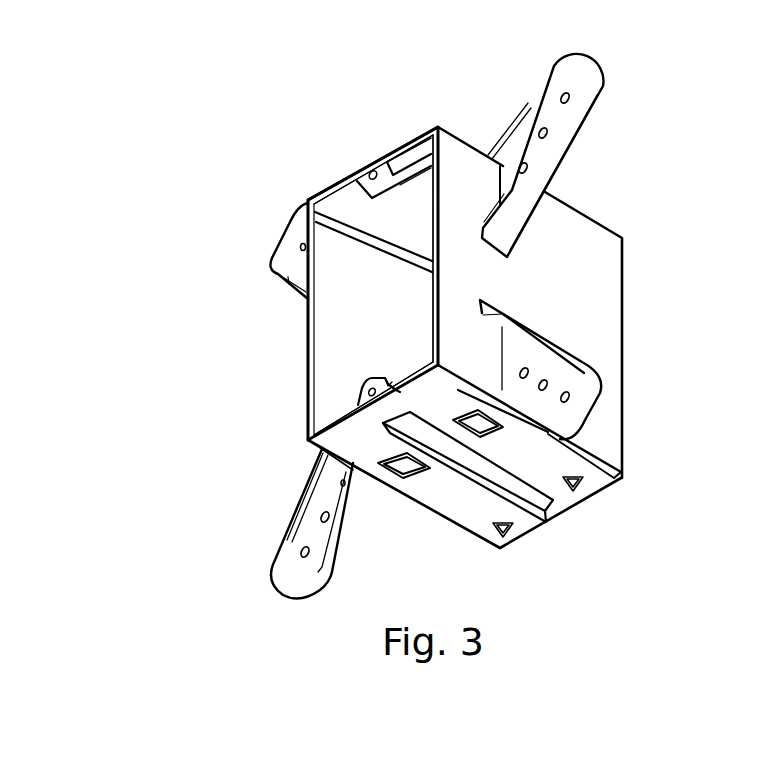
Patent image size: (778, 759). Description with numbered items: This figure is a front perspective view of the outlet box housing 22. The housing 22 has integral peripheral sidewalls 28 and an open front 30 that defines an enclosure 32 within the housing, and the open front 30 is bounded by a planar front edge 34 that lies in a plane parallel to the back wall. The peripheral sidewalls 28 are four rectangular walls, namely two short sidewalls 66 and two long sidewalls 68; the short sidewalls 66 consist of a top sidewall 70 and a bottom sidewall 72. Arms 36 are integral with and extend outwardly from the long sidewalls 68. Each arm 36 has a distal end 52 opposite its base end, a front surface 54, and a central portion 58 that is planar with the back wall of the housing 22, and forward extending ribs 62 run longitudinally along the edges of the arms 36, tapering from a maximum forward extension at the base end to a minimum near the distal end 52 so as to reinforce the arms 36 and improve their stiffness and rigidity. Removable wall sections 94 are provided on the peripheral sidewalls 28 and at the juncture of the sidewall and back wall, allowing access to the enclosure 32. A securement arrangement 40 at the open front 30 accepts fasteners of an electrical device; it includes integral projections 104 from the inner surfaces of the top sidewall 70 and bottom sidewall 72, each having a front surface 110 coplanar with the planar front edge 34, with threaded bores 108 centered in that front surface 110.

The housing 22 is at (200, 193).
The peripheral sidewalls 28 is at (449, 187).
The open front 30 is at (296, 345).
The enclosure 32 is at (348, 292).
The planar front edge 34 is at (272, 262).
The arms 36 is at (585, 90).
The securement arrangement 40 is at (373, 372).
The distal end 52 is at (584, 57).
The front surface 54 is at (540, 118).
The central portion 58 is at (534, 380).
The forward extending ribs 62 is at (514, 222).
The short sidewalls 66 is at (441, 127).
The long sidewalls 68 is at (438, 307).
The top sidewall 70 is at (333, 178).
The bottom sidewall 72 is at (322, 418).
The removable wall sections 94 is at (479, 430).
The integral projections 104 is at (392, 200).
The threaded bores 108 is at (380, 153).
The front surface 110 is at (422, 127).